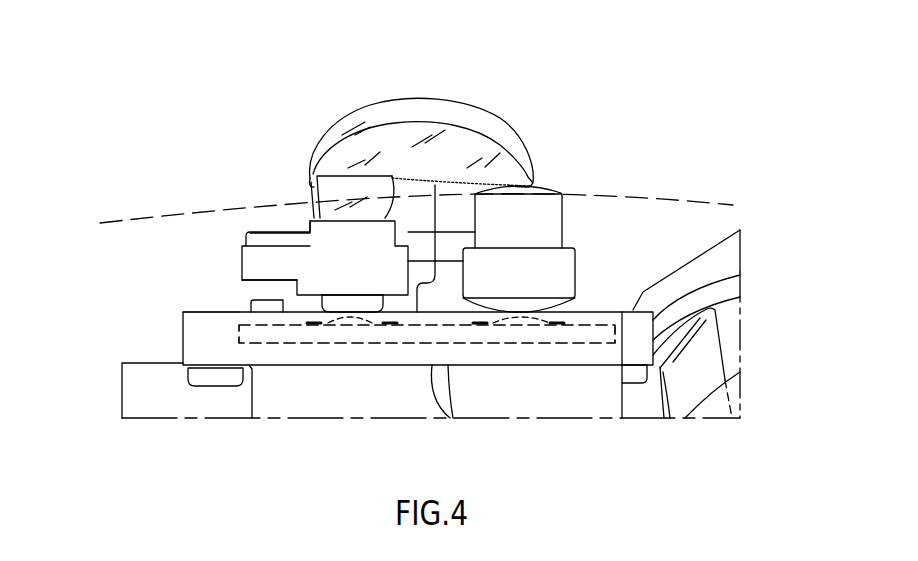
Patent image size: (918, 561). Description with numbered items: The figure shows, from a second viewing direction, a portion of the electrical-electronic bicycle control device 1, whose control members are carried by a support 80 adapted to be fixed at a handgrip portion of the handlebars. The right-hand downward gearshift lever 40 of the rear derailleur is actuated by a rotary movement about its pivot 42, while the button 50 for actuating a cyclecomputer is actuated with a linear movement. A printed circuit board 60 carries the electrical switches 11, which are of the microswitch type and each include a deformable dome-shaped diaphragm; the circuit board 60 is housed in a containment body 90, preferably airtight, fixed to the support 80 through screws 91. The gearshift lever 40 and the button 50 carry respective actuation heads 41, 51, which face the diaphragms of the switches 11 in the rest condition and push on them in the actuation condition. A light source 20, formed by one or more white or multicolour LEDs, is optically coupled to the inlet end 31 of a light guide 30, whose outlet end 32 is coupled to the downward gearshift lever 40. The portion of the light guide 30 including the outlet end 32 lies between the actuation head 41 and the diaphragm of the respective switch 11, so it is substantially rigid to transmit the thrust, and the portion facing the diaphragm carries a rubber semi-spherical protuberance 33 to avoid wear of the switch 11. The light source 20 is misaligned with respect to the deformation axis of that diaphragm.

The bicycle control device 1 is at (640, 80).
The electrical switches 11 is at (360, 323).
The light source 20 is at (262, 309).
The light guide 30 is at (253, 260).
The inlet end 31 is at (250, 283).
The outlet end 32 is at (390, 197).
The semi-spherical protuberance 33 is at (338, 303).
The gearshift lever 40 is at (448, 108).
The actuation head 41 is at (307, 180).
The pivot 42 is at (267, 237).
The button 50 is at (545, 214).
The actuation head 51 is at (545, 303).
The printed circuit board 60 is at (240, 330).
The support 80 is at (145, 378).
The containment body 90 is at (197, 328).
The screws 91 is at (218, 378).